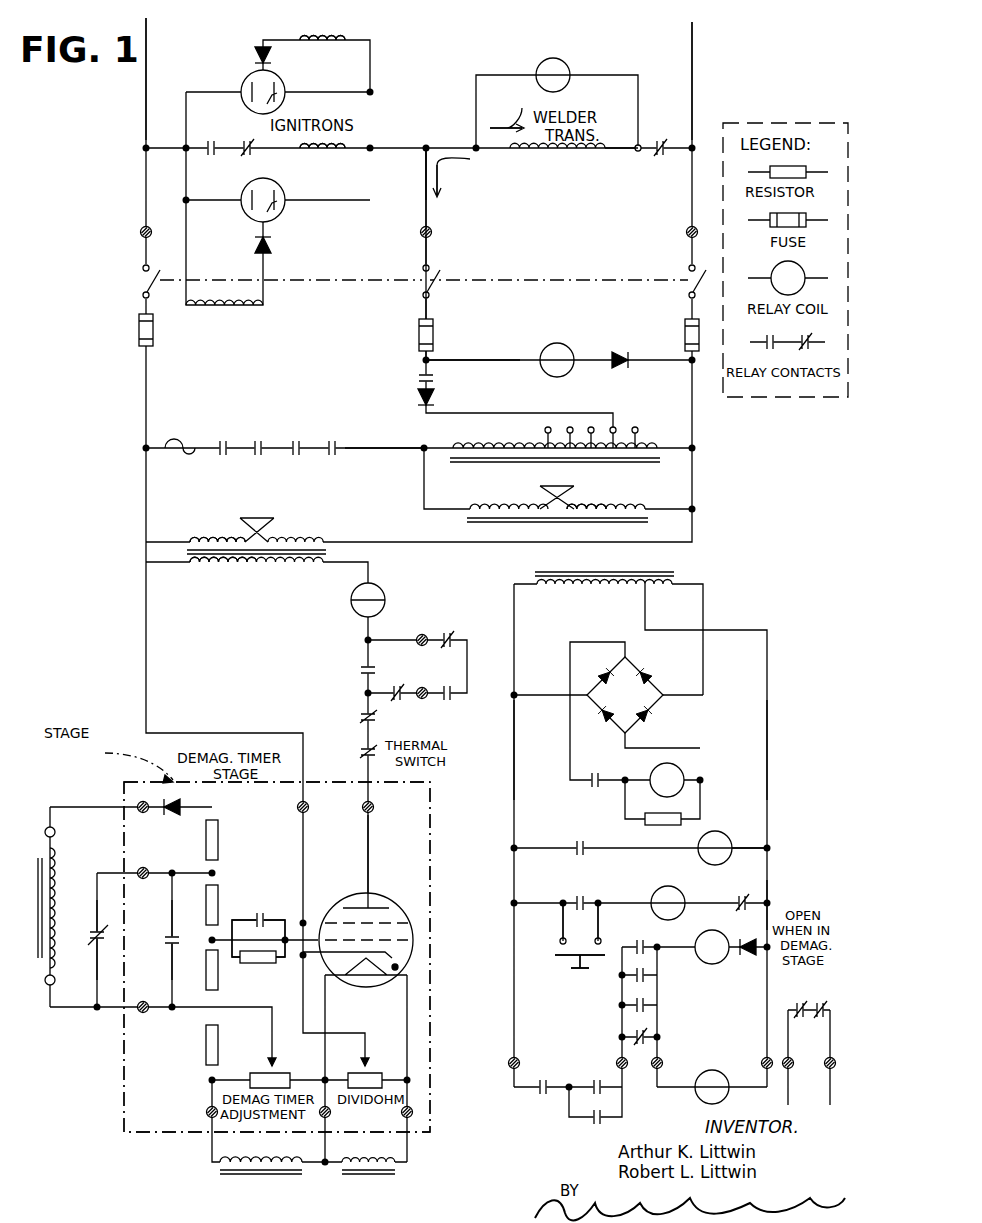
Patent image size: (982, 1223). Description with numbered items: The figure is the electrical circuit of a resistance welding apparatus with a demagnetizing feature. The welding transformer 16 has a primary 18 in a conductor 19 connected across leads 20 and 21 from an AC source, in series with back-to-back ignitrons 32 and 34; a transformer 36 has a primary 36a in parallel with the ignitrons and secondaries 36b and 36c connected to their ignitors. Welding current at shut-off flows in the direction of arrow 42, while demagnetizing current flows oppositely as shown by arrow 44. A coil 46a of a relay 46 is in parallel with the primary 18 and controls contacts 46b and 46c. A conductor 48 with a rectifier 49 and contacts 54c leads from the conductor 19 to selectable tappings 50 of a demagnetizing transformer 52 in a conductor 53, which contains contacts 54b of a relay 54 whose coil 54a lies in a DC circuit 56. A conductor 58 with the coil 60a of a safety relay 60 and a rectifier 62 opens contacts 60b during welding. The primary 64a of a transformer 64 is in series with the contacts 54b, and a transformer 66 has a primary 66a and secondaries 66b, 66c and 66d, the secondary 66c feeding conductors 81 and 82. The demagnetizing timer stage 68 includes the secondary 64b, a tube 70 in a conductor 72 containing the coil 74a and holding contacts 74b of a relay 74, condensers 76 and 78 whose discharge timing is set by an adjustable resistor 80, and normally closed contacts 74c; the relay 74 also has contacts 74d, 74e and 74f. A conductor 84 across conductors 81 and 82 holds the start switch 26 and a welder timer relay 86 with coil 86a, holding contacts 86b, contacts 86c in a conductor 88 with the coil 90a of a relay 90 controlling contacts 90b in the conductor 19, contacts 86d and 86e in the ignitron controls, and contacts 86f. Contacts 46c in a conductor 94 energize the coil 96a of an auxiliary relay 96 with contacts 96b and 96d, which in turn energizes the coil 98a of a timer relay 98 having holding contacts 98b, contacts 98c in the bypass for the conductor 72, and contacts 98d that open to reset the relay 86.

The transformer 16 is at (565, 160).
The primary 18 is at (602, 152).
The conductor 19 is at (434, 124).
The lead 20 is at (694, 98).
The lead 21 is at (146, 98).
The switch 26 is at (549, 953).
The ignitron 32 is at (280, 212).
The ignitron 34 is at (256, 48).
The transformer 36 is at (302, 148).
The primary 36a is at (340, 152).
The secondary 36b is at (238, 310).
The secondary 36c is at (347, 40).
The arrow 42 is at (505, 108).
The arrow 44 is at (466, 189).
The relay 46 is at (557, 53).
The coil 46a is at (560, 72).
The contacts 46b is at (466, 612).
The contacts 46c is at (596, 1074).
The conductor 48 is at (426, 198).
The rectifier 49 is at (418, 397).
The tappings 50 is at (616, 428).
The transformer 52 is at (504, 446).
The conductor 53 is at (402, 448).
The relay 54 is at (688, 778).
The coil 54a is at (660, 776).
The contacts 54b is at (337, 433).
The contacts 54c is at (434, 378).
The DC circuit 56 is at (637, 666).
The conductor 58 is at (488, 360).
The safety relay 60 is at (553, 338).
The coil 60a is at (560, 352).
The contacts 60b is at (362, 717).
The rectifier 62 is at (625, 358).
The transformer 64 is at (644, 506).
The primary 64a is at (620, 484).
The secondary 64b is at (45, 960).
The transformer 66 is at (168, 557).
The primary 66a is at (224, 540).
The secondary 66b is at (242, 566).
The secondary 66c is at (673, 582).
The secondary 66d is at (350, 1177).
The demagnetizing timer stage 68 is at (254, 939).
The tube 70 is at (357, 893).
The conductor 72 is at (368, 838).
The relay 74 is at (387, 592).
The coil 74a is at (356, 603).
The holding contacts 74b is at (357, 668).
The contacts 74c is at (93, 930).
The contacts 74d is at (606, 755).
The contacts 74e is at (835, 985).
The contacts 74f is at (627, 932).
The condenser 76 is at (264, 915).
The condenser 78 is at (163, 935).
The adjustable resistor 80 is at (272, 1070).
The conductor 81 is at (770, 783).
The conductor 82 is at (512, 785).
The conductor 84 is at (769, 902).
The timer relay 86 is at (684, 879).
The coil 86a is at (658, 898).
The holding contacts 86b is at (577, 894).
The contacts 86c is at (576, 842).
The contacts 86d is at (228, 160).
The contacts 86e is at (250, 138).
The relay contacts 86f is at (542, 1091).
The conductor 88 is at (748, 848).
The relay 90 is at (732, 820).
The coil 90a is at (698, 848).
The contacts 90b is at (662, 142).
The conductor 94 is at (622, 975).
The auxiliary relay 96 is at (730, 928).
The coil 96a is at (712, 955).
The contacts 96b is at (668, 1000).
The contacts 96d is at (396, 685).
The relay 98 is at (706, 1069).
The coil 98a is at (712, 1080).
The holding contacts 98b is at (595, 1116).
The contacts 98c is at (464, 708).
The contacts 98d is at (744, 896).